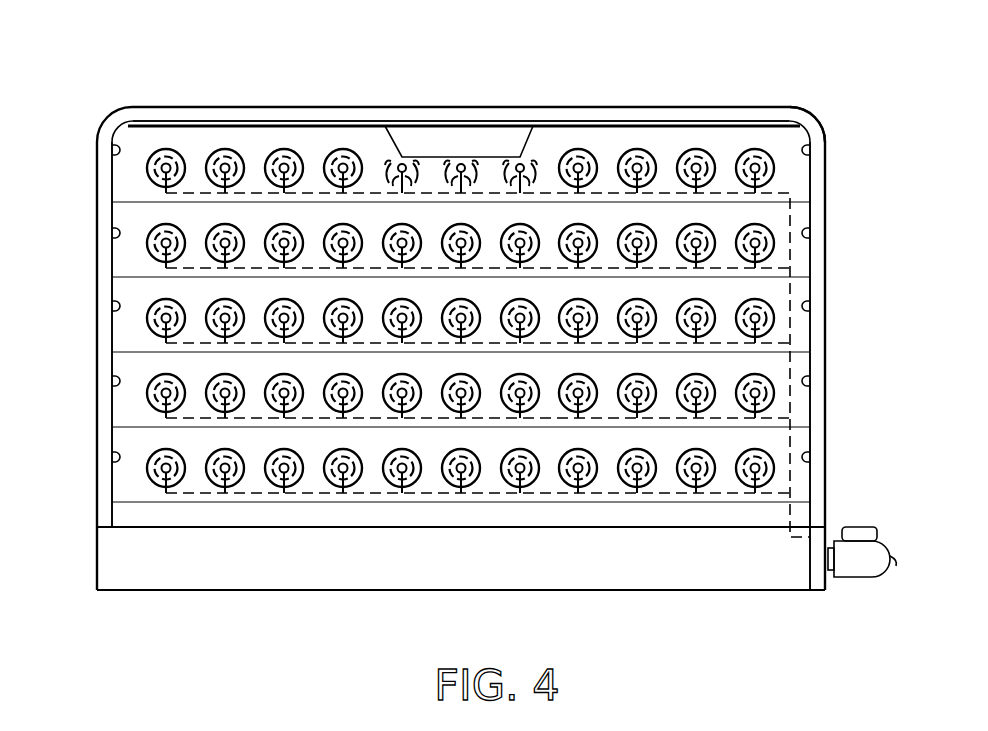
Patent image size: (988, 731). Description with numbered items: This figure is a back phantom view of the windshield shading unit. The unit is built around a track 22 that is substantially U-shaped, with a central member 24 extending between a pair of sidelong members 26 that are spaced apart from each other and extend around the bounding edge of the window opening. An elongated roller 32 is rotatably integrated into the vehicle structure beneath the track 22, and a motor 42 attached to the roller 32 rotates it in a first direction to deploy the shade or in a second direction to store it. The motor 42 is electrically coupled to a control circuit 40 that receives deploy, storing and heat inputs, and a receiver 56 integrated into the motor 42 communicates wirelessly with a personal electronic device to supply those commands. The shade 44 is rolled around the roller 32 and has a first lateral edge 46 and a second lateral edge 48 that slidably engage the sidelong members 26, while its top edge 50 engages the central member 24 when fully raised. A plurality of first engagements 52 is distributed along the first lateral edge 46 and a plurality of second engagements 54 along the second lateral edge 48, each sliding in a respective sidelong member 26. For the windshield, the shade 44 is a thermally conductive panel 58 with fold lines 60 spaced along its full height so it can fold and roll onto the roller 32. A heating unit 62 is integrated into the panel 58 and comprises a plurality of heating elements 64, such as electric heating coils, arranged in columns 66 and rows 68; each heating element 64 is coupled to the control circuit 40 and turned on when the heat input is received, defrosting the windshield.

The track 22 is at (108, 116).
The central member 24 is at (613, 120).
The sidelong members 26 is at (823, 330).
The roller 32 is at (275, 590).
The control circuit 40 is at (862, 527).
The motor 42 is at (890, 558).
The shade 44 is at (800, 108).
The first lateral edge 46 is at (112, 410).
The second lateral edge 48 is at (824, 410).
The top edge 50 is at (396, 126).
The first engagements 52 is at (119, 146).
The second engagements 54 is at (815, 150).
The receiver 56 is at (849, 545).
The panel 58 is at (262, 128).
The fold lines 60 is at (427, 350).
The heating unit 62 is at (382, 476).
The heating elements 64 is at (284, 150).
The columns 66 is at (745, 148).
The rows 68 is at (138, 251).